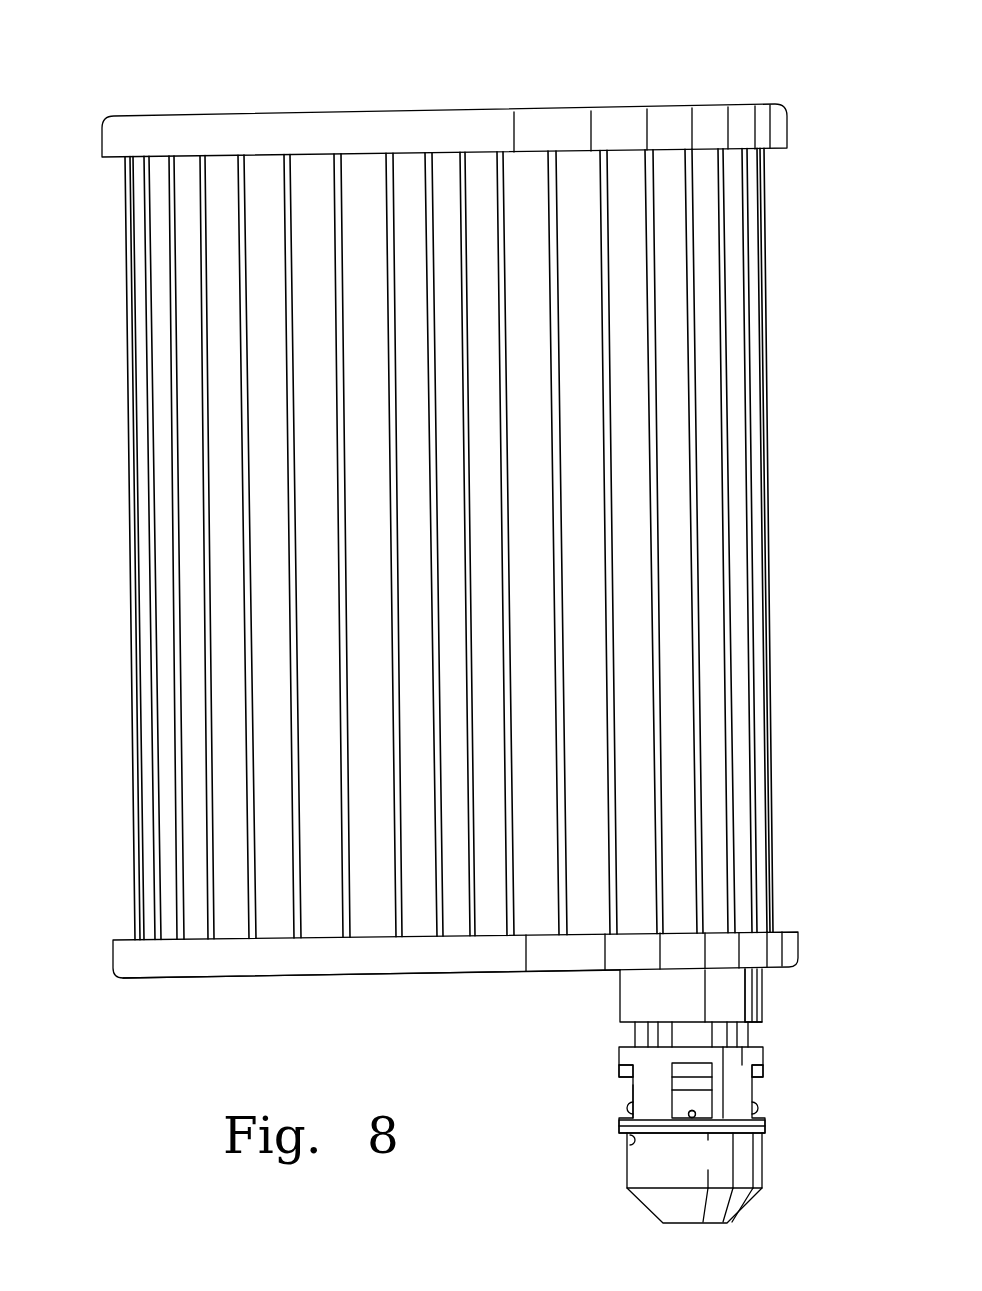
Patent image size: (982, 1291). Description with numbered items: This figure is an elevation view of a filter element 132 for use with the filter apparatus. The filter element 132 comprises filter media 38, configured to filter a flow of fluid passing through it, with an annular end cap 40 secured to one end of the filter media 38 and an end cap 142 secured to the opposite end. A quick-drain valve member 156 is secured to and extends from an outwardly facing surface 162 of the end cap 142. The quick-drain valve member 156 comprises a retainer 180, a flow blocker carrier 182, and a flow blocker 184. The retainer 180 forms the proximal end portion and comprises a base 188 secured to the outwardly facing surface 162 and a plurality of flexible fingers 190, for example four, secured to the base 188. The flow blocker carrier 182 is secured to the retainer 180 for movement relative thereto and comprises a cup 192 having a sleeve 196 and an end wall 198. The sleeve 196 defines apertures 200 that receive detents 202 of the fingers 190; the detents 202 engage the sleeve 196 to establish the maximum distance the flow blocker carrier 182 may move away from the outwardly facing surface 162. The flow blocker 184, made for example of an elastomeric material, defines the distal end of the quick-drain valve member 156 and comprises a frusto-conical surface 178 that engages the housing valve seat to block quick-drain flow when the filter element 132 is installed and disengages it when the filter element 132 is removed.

The filter element 132 is at (108, 82).
The end cap 40 is at (355, 116).
The filter media 38 is at (730, 500).
The end cap 142 is at (275, 965).
The outwardly facing surface 162 is at (356, 978).
The quick-drain valve member 156 is at (530, 1080).
The base 188 is at (636, 993).
The flexible fingers 190 is at (640, 1022).
The retainer 180 is at (768, 1013).
The detents 202 is at (627, 1085).
The sleeve 196 is at (633, 1093).
The flow blocker carrier 182 is at (742, 1085).
The cup 192 is at (757, 1107).
The end wall 198 is at (637, 1142).
The flow blocker 184 is at (750, 1178).
The apertures 200 is at (702, 1122).
The frusto-conical surface 178 is at (640, 1213).